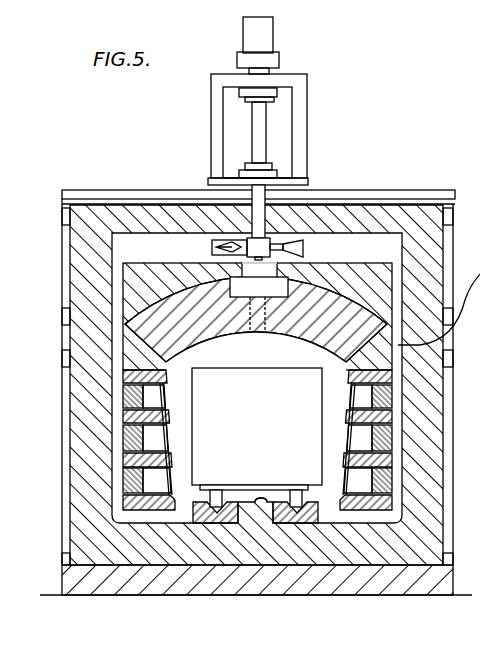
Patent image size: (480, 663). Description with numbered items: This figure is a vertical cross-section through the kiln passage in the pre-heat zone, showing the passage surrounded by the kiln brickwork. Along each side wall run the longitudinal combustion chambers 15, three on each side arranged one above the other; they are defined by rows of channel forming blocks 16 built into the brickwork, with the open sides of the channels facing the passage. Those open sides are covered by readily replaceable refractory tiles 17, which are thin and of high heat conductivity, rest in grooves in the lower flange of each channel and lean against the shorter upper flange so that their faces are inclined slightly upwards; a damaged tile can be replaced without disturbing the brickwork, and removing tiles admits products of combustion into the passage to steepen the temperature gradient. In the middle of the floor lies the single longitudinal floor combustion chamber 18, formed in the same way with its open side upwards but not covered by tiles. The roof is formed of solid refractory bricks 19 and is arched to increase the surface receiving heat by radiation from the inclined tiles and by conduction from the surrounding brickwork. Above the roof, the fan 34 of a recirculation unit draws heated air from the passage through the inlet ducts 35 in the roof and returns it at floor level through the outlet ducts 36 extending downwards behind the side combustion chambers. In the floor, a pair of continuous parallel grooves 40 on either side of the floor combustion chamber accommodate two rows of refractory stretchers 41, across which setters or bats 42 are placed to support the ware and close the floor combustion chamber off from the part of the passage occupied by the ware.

The combustion chambers 15 is at (125, 398).
The channel forming blocks 16 is at (148, 395).
The refractory tiles 17 is at (148, 438).
The floor combustion chamber 18 is at (261, 515).
The solid refractory bricks 19 is at (303, 327).
The fan 34 is at (212, 248).
The inlet ducts 35 is at (252, 340).
The outlet ducts 36 is at (118, 340).
The grooves 40 is at (220, 515).
The refractory stretchers 41 is at (295, 493).
The setters or bats 42 is at (214, 485).